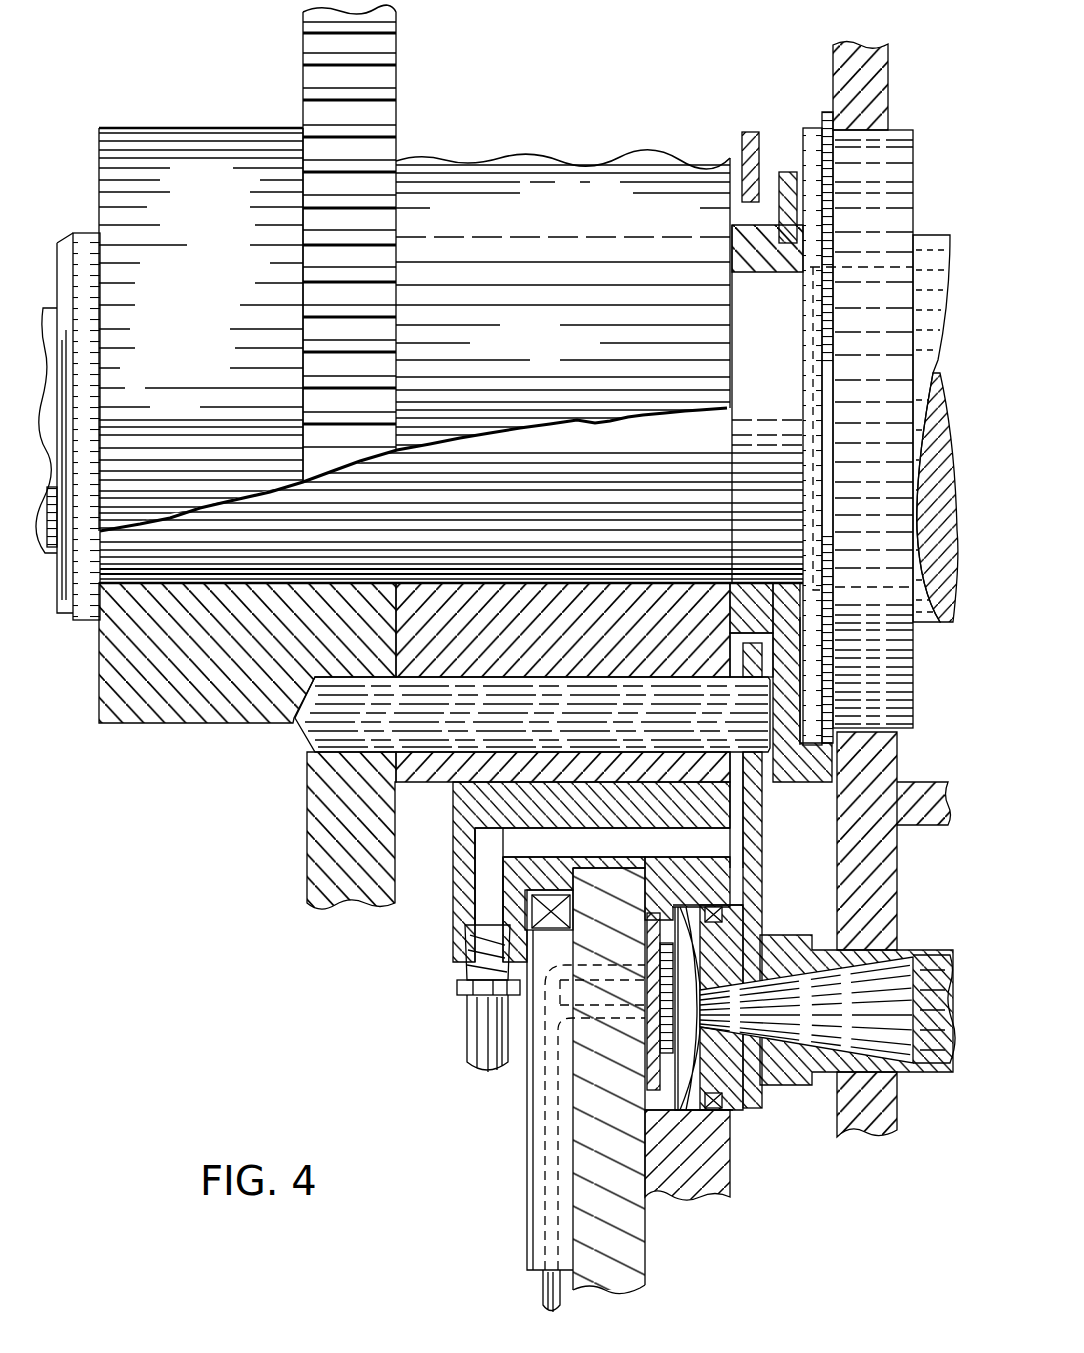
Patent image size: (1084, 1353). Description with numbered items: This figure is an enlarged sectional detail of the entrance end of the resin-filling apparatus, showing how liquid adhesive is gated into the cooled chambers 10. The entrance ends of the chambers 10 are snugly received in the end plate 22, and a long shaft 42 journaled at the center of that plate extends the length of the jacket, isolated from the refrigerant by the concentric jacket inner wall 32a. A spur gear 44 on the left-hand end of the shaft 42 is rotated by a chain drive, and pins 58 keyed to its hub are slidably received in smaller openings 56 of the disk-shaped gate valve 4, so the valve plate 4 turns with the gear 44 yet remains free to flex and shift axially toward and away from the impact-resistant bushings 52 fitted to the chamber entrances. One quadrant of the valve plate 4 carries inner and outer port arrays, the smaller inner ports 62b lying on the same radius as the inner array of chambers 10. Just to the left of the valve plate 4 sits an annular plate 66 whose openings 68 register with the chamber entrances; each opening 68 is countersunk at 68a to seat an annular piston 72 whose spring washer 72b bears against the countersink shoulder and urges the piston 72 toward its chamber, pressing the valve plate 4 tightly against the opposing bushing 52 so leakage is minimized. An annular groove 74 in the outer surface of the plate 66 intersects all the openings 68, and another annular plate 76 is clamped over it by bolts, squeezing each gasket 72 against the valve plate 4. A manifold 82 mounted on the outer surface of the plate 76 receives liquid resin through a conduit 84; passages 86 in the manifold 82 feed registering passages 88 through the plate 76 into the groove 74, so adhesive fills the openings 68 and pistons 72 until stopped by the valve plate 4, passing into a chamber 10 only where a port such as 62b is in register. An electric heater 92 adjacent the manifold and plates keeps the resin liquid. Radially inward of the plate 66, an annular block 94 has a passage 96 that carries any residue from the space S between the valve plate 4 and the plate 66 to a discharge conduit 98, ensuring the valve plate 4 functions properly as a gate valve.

The gate valve 4 is at (755, 1102).
The chamber 10 is at (923, 1070).
The plate 22 is at (877, 1135).
The jacket inner wall 32a is at (917, 792).
The shaft 42 is at (930, 626).
The spur gear 44 is at (315, 845).
The bushing 52 is at (800, 1072).
The opening 56 is at (745, 755).
The pin 58 is at (322, 722).
The port 62b is at (770, 1022).
The annular plate 66 is at (700, 1185).
The opening 68 is at (647, 1065).
The countersink 68a is at (693, 1107).
The piston 72 is at (740, 935).
The spring washer 72b is at (675, 922).
The annular groove 74 is at (633, 1062).
The annular plate 76 is at (620, 1277).
The manifold 82 is at (537, 1130).
The conduit 84 is at (543, 1290).
The passage 86 is at (538, 1028).
The passage 88 is at (647, 1062).
The electric heater 92 is at (538, 912).
The annular block 94 is at (598, 795).
The passage 96 is at (540, 840).
The discharge conduit 98 is at (470, 1030).
The space S is at (735, 868).